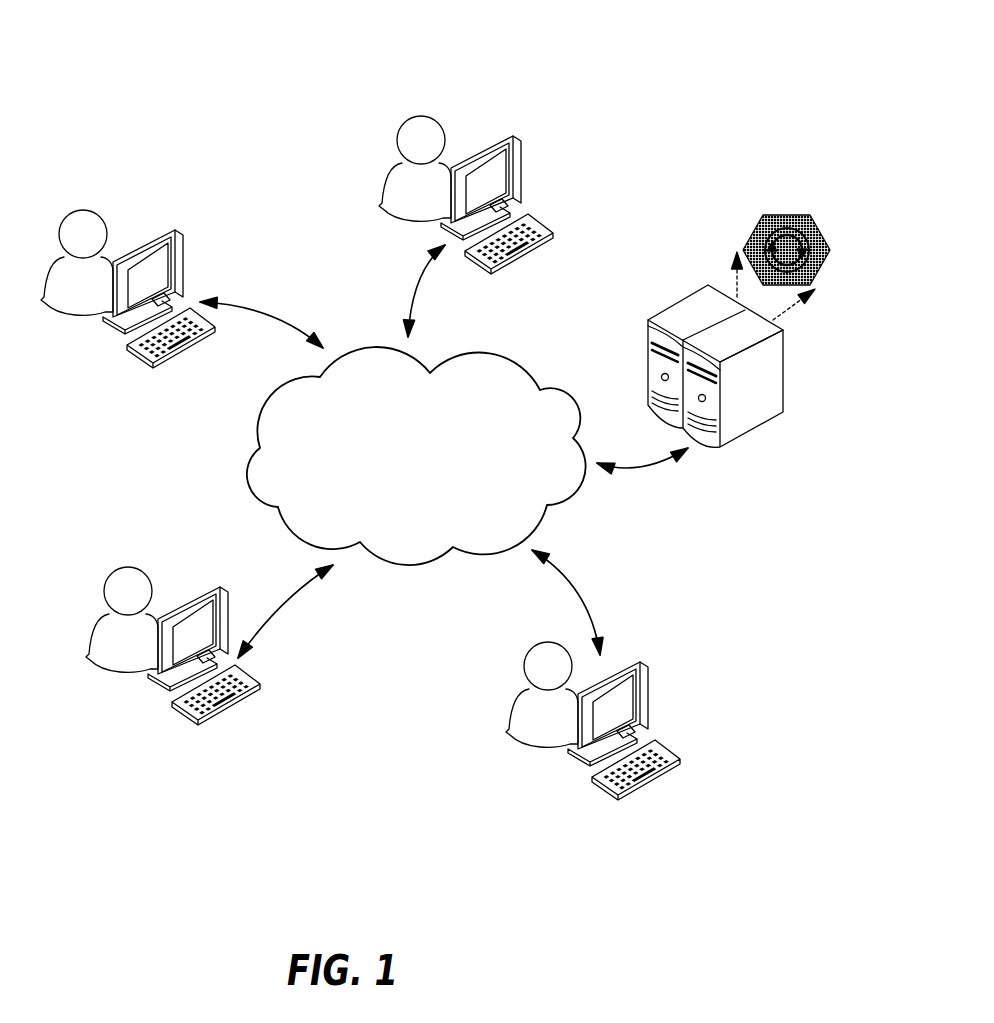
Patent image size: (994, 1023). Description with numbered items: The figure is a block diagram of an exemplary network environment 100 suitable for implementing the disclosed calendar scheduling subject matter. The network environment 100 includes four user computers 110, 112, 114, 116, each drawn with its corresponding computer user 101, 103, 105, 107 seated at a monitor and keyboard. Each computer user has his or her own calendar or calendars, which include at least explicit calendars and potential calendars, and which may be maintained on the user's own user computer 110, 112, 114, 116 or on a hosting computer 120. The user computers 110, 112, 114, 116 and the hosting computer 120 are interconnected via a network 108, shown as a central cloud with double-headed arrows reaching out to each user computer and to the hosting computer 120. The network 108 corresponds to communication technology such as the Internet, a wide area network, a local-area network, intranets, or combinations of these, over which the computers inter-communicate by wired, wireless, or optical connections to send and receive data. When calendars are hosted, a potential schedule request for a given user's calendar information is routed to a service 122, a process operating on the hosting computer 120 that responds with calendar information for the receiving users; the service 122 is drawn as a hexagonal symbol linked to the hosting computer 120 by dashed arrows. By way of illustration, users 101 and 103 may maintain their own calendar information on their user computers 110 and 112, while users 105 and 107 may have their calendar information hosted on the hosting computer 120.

The network environment 100 is at (700, 111).
The computer user 101 is at (97, 212).
The computer user 103 is at (433, 118).
The computer user 105 is at (112, 672).
The computer user 107 is at (535, 747).
The network 108 is at (402, 580).
The user computer 110 is at (168, 220).
The user computer 112 is at (507, 128).
The user computer 114 is at (182, 720).
The user computer 116 is at (598, 792).
The hosting computer 120 is at (675, 297).
The service 122 is at (773, 202).